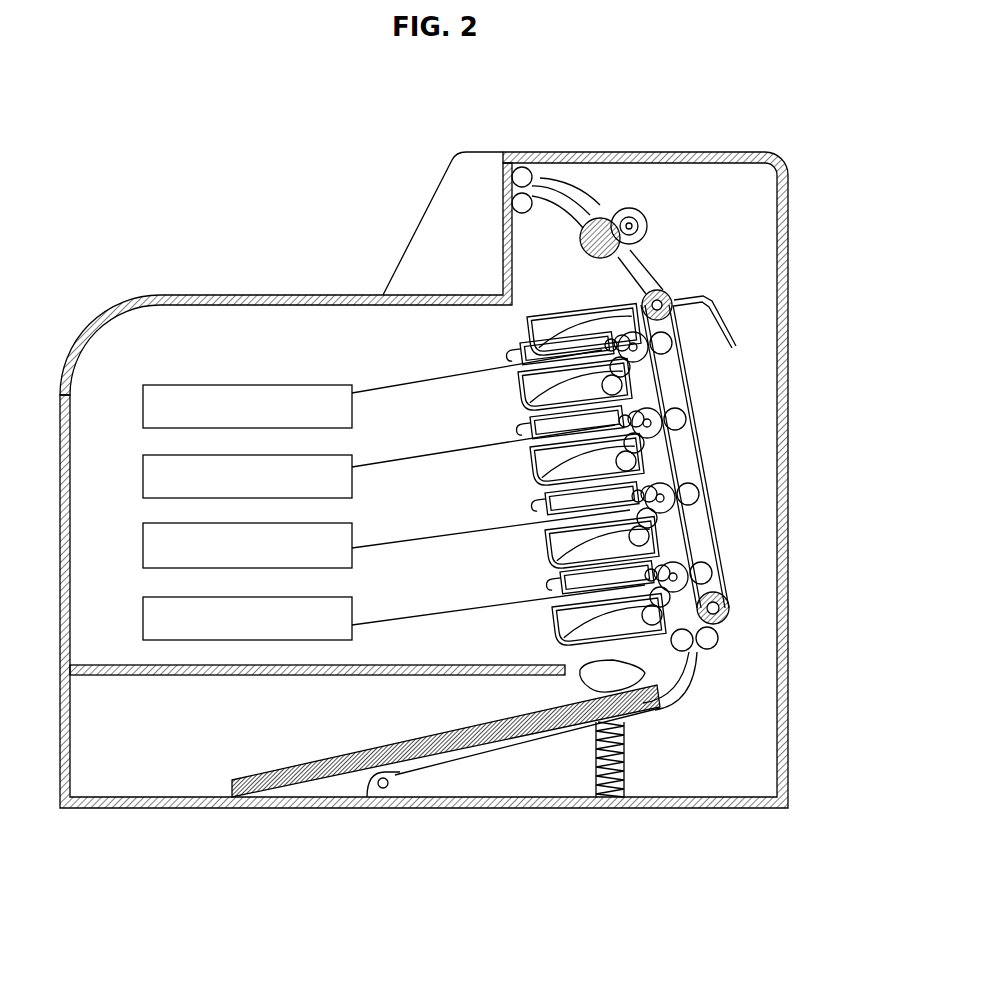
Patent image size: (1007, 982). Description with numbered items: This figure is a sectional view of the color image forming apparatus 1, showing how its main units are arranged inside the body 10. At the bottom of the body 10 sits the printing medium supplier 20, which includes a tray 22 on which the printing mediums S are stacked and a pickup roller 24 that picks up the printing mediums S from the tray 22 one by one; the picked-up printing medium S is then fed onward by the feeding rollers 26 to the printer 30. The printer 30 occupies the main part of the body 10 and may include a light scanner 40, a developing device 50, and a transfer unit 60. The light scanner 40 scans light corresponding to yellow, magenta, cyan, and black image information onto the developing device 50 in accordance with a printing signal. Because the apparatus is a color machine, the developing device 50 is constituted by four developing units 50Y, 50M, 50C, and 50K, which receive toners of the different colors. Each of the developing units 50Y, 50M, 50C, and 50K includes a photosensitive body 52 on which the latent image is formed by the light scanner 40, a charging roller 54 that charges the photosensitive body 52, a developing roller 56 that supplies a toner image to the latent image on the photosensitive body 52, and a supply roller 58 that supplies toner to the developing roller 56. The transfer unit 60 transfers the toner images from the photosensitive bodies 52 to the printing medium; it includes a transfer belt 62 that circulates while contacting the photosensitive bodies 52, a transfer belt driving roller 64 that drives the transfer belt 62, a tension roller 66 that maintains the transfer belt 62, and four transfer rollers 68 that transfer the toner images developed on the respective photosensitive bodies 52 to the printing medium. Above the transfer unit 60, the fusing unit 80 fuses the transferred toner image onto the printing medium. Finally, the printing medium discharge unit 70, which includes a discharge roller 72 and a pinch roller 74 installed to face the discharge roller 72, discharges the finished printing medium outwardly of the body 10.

The image forming apparatus 1 is at (451, 493).
The body 10 is at (737, 135).
The printing medium supplier 20 is at (490, 751).
The tray 22 is at (546, 735).
The pickup roller 24 is at (590, 678).
The feeding rollers 26 is at (713, 652).
The printer 30 is at (383, 322).
The light scanner 40 is at (129, 374).
The developing device 50 is at (575, 444).
The developing unit 50K is at (491, 387).
The developing unit 50C is at (509, 465).
The developing unit 50M is at (521, 540).
The developing unit 50Y is at (532, 617).
The photosensitive body 52 is at (650, 358).
The charging roller 54 is at (506, 350).
The developing roller 56 is at (645, 383).
The supply roller 58 is at (615, 398).
The transfer unit 60 is at (745, 465).
The transfer belt 62 is at (700, 432).
The transfer belt driving roller 64 is at (670, 296).
The tension roller 66 is at (724, 620).
The transfer rollers 68 is at (672, 344).
The printing medium discharge unit 70 is at (532, 178).
The discharge roller 72 is at (518, 168).
The pinch roller 74 is at (512, 202).
The fusing unit 80 is at (664, 222).
The printing medium S is at (292, 780).